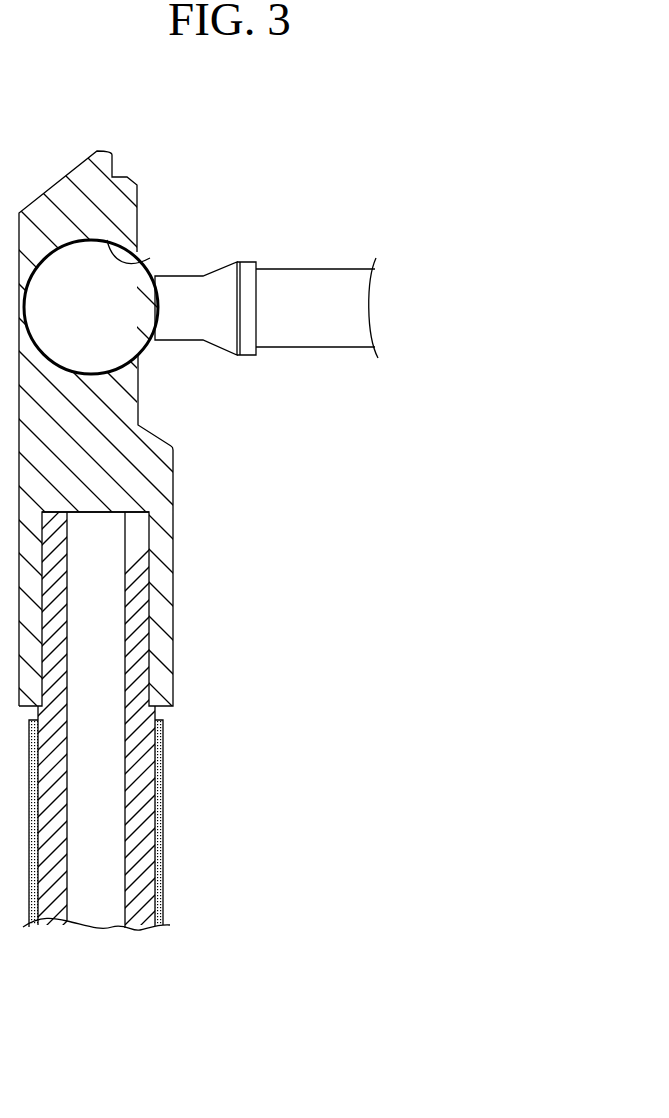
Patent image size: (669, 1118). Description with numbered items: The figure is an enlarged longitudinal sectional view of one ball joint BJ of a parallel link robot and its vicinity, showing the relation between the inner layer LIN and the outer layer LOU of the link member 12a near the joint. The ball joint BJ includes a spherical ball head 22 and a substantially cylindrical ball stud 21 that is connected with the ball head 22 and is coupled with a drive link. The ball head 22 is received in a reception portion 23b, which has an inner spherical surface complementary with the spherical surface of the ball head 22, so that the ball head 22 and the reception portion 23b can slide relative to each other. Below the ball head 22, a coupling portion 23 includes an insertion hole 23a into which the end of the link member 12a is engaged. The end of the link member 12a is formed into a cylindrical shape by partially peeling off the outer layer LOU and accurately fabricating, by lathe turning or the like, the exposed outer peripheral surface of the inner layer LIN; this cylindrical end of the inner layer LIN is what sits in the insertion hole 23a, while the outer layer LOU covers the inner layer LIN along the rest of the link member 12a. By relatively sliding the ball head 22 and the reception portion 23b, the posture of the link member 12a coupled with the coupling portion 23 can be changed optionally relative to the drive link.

The ball stud 21 is at (323, 327).
The ball head 22 is at (137, 342).
The coupling portion 23 is at (137, 382).
The insertion hole 23a is at (100, 512).
The reception portion 23b is at (140, 259).
The ball joint BJ is at (348, 438).
The link member 12a is at (180, 740).
The inner layer LIN is at (143, 782).
The outer layer LOU is at (158, 855).